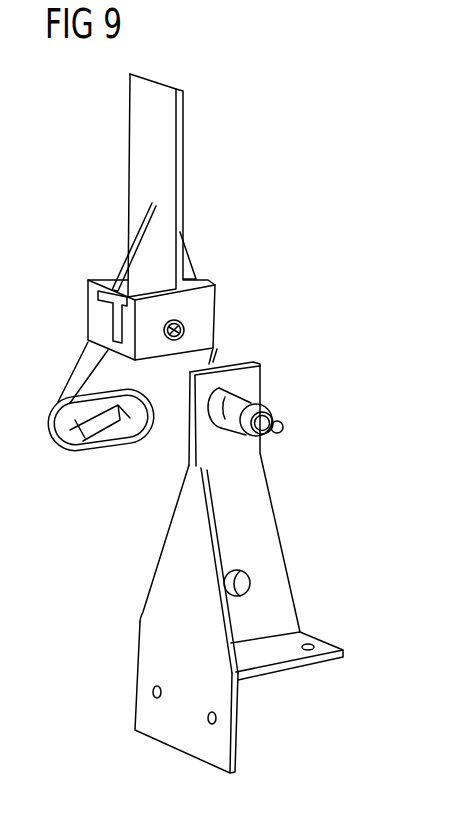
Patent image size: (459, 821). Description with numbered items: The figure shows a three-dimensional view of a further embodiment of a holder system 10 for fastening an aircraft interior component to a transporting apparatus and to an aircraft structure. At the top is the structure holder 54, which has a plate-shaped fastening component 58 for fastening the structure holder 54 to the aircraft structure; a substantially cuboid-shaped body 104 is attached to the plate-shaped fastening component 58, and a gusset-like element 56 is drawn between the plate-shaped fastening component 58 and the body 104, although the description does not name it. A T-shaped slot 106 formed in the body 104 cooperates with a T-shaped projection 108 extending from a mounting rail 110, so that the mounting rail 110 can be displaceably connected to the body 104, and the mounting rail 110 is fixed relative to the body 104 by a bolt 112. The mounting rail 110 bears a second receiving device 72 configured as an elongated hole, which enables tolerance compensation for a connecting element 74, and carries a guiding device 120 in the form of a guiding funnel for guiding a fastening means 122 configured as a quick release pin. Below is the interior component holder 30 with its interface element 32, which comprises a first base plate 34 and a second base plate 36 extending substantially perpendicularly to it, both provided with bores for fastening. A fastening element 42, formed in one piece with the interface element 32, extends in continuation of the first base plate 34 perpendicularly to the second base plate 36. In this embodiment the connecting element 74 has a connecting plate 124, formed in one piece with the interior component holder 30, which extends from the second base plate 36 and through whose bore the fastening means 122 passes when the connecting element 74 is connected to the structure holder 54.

The holder system 10 is at (318, 133).
The interior component holder 30 is at (130, 608).
The interface element 32 is at (271, 693).
The first base plate 34 is at (238, 740).
The second base plate 36 is at (302, 642).
The fastening element 42 is at (167, 562).
The structure holder 54 is at (197, 178).
The gusset 56 is at (184, 269).
The plate-shaped fastening component 58 is at (138, 157).
The second receiving device 72 is at (143, 437).
The connecting element 74 is at (297, 536).
The body 104 is at (206, 305).
The T-shaped slot 106 is at (113, 316).
The T-shaped projection 108 is at (108, 343).
The mounting rail 110 is at (205, 362).
The bolt 112 is at (186, 330).
The guiding device 120 is at (105, 433).
The fastening means 122 is at (243, 400).
The connecting plate 124 is at (262, 490).